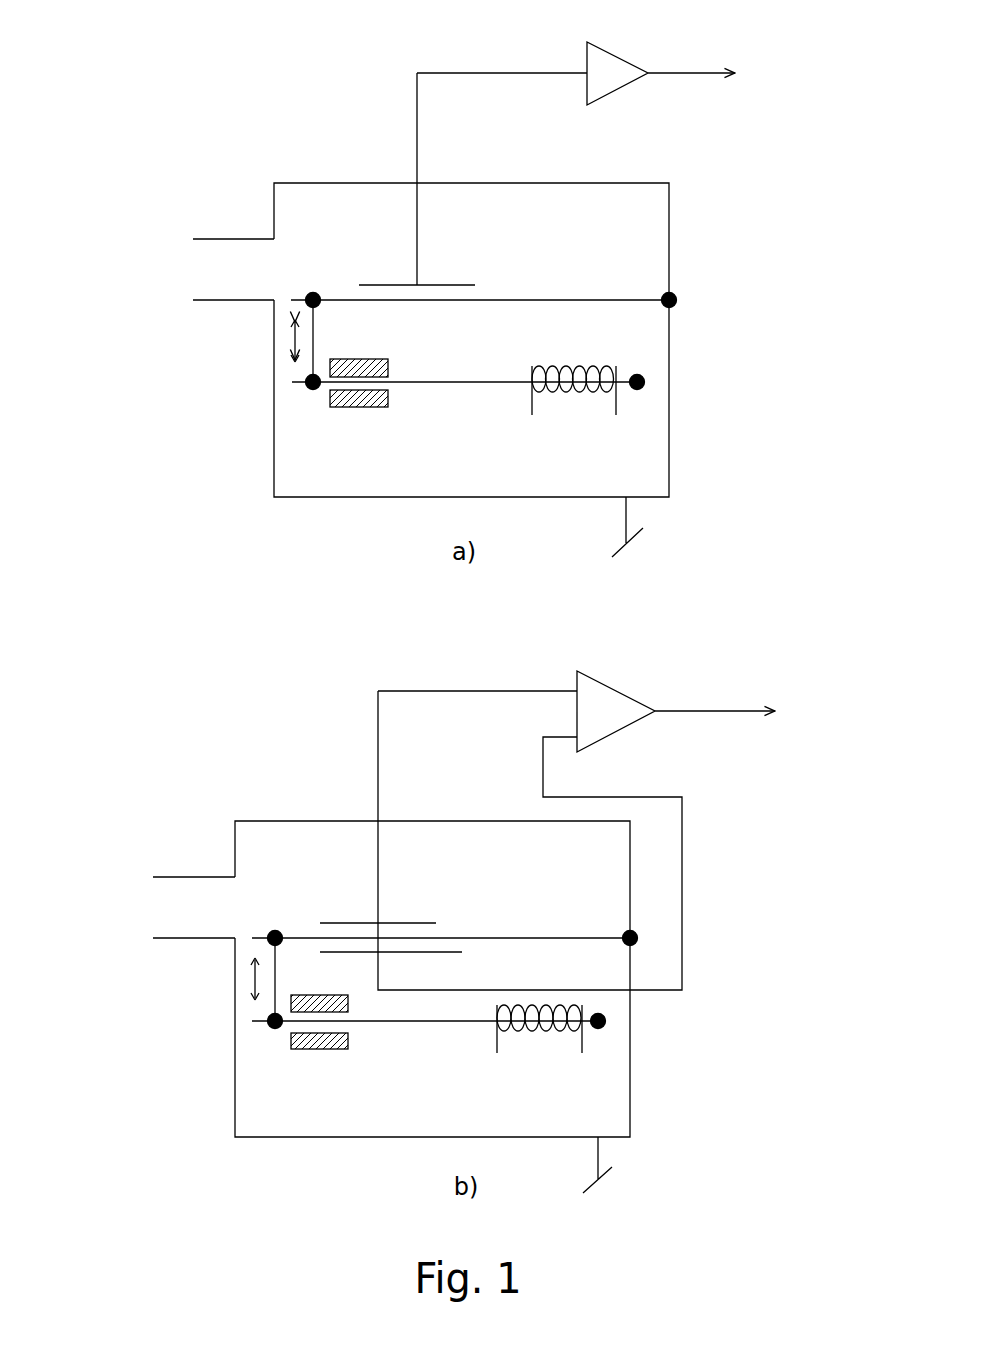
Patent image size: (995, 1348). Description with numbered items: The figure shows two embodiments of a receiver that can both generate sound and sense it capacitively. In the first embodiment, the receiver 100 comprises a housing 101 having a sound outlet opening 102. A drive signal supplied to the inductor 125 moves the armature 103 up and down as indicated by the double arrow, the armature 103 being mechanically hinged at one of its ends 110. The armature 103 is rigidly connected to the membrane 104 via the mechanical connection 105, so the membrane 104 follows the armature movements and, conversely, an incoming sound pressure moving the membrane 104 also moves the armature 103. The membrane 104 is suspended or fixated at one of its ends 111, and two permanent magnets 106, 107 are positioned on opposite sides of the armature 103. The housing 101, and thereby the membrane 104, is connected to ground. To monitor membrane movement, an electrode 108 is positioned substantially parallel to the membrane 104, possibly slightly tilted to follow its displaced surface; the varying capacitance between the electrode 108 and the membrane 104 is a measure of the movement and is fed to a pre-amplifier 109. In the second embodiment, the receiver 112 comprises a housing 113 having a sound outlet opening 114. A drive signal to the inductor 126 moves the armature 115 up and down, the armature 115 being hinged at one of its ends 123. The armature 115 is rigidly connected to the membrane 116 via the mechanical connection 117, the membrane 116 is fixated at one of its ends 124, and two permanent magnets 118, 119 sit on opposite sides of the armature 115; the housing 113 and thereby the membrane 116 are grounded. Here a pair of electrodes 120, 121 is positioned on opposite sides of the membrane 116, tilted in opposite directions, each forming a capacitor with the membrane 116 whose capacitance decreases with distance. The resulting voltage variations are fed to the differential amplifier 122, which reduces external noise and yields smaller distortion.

The receiver 100 is at (745, 132).
The housing 101 is at (672, 236).
The sound outlet opening 102 is at (205, 271).
The armature 103 is at (495, 384).
The membrane 104 is at (562, 298).
The mechanical connection 105 is at (313, 366).
The permanent magnet 106 is at (358, 396).
The permanent magnet 107 is at (378, 371).
The electrode 108 is at (447, 284).
The pre-amplifier 109 is at (608, 72).
The end of the armature 110 is at (645, 380).
The end of the membrane 111 is at (673, 302).
The receiver 112 is at (745, 780).
The housing 113 is at (633, 1074).
The sound outlet opening 114 is at (172, 903).
The armature 115 is at (463, 1023).
The membrane 116 is at (520, 930).
The mechanical connection 117 is at (268, 1003).
The permanent magnet 118 is at (323, 1041).
The permanent magnet 119 is at (345, 1000).
The electrode 120 is at (417, 910).
The electrode 121 is at (460, 958).
The differential amplifier 122 is at (603, 703).
The end of the armature 123 is at (606, 1020).
The end of the membrane 124 is at (636, 940).
The inductor 125 is at (577, 396).
The inductor 126 is at (537, 1034).